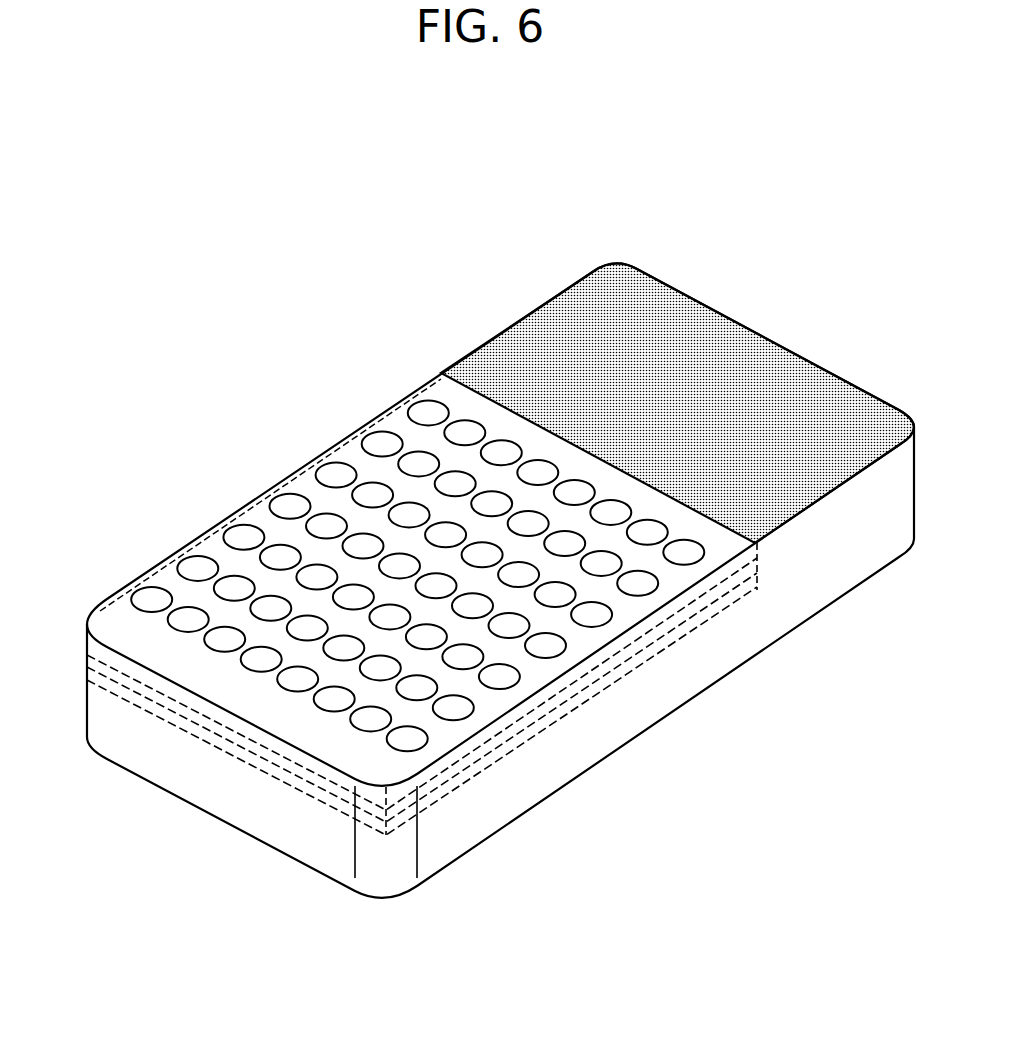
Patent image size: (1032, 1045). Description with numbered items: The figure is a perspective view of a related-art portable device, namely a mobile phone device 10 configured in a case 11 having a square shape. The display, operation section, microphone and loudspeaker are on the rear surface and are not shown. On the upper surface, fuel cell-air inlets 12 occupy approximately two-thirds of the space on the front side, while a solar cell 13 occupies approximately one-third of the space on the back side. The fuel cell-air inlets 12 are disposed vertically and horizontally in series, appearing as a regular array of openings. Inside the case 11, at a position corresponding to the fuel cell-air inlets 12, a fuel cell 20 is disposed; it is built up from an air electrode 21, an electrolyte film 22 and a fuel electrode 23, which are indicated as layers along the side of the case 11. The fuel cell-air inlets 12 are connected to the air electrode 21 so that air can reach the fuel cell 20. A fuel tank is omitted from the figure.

The mobile phone device 10 is at (659, 152).
The case 11 is at (404, 382).
The fuel cell-air inlets 12 is at (190, 561).
The solar cell 13 is at (847, 400).
The fuel cell 20 is at (158, 702).
The air electrode 21 is at (690, 600).
The electrolyte film 22 is at (572, 690).
The fuel electrode 23 is at (536, 742).